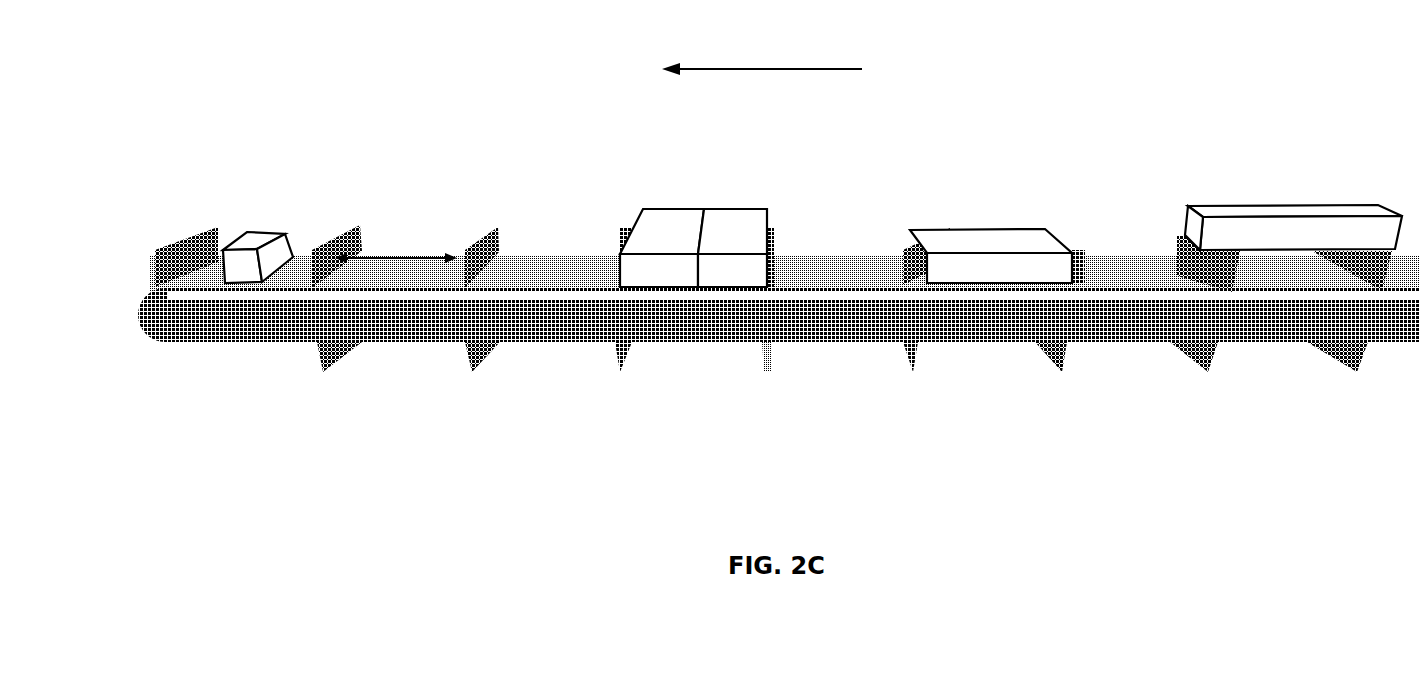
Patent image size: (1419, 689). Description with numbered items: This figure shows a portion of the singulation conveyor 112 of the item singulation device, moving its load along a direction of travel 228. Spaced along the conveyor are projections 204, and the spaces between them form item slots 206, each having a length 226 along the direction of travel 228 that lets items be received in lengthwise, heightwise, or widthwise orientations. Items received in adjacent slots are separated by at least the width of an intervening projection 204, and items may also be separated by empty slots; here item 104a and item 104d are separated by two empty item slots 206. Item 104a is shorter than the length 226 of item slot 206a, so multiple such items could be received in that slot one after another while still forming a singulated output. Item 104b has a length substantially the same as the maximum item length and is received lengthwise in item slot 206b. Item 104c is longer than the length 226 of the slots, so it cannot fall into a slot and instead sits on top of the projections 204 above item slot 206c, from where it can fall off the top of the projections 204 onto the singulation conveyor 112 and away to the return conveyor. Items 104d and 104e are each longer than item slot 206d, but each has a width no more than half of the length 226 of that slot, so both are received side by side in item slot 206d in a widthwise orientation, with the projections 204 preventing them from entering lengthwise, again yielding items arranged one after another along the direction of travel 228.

The singulation conveyor 112 is at (166, 118).
The projections 204 is at (153, 255).
The item slots 206 is at (565, 244).
The item slot 206a is at (280, 203).
The item slot 206b is at (980, 214).
The item slot 206c is at (1312, 290).
The item slot 206d is at (745, 192).
The length of item slot 226 is at (396, 258).
The direction of travel 228 is at (777, 69).
The item 104a is at (247, 233).
The item 104b is at (1045, 273).
The item 104c is at (1190, 208).
The item 104d is at (640, 273).
The item 104e is at (752, 274).